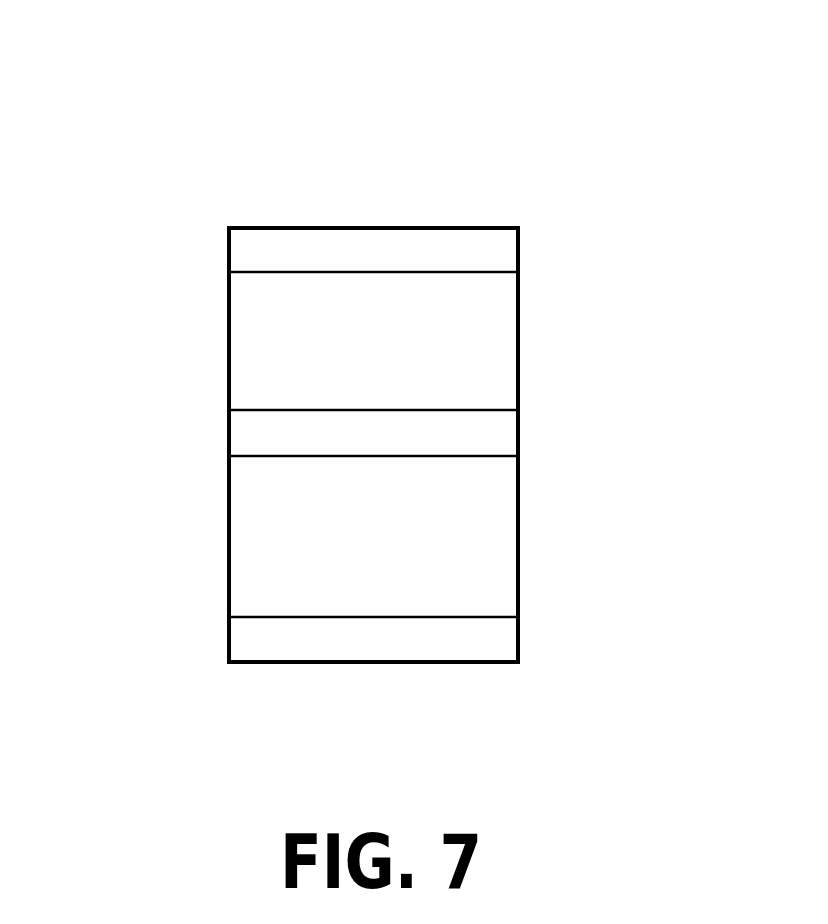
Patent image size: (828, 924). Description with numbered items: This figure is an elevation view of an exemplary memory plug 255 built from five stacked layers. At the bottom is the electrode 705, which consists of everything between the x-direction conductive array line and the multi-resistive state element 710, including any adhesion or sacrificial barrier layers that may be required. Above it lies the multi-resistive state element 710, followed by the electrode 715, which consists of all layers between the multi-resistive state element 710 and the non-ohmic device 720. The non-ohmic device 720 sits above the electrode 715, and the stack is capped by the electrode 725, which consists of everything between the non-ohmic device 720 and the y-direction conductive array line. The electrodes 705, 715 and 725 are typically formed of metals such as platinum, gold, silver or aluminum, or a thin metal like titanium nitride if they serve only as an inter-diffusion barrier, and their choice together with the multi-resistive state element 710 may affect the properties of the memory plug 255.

The memory plug 255 is at (477, 128).
The electrode 705 is at (227, 644).
The multi-resistive state element 710 is at (520, 532).
The electrode 715 is at (227, 436).
The non-ohmic device 720 is at (520, 345).
The electrode 725 is at (227, 242).